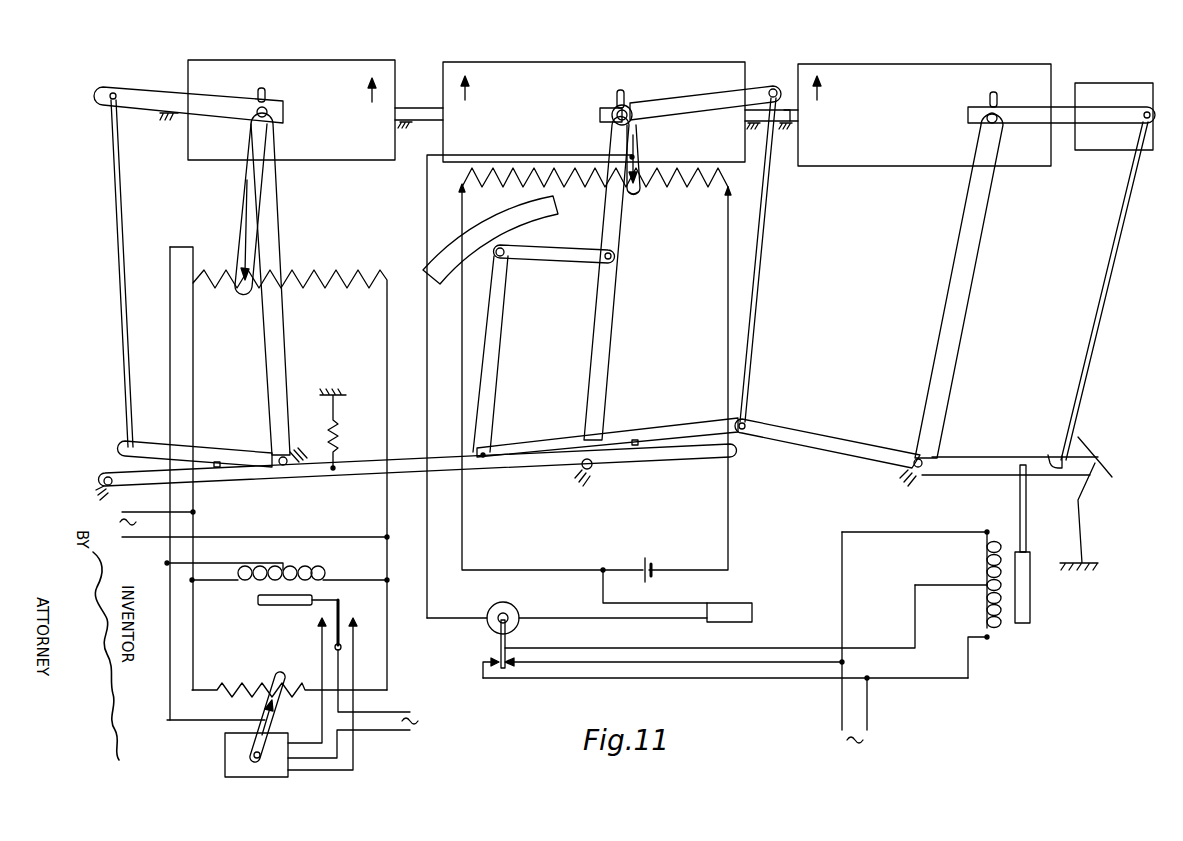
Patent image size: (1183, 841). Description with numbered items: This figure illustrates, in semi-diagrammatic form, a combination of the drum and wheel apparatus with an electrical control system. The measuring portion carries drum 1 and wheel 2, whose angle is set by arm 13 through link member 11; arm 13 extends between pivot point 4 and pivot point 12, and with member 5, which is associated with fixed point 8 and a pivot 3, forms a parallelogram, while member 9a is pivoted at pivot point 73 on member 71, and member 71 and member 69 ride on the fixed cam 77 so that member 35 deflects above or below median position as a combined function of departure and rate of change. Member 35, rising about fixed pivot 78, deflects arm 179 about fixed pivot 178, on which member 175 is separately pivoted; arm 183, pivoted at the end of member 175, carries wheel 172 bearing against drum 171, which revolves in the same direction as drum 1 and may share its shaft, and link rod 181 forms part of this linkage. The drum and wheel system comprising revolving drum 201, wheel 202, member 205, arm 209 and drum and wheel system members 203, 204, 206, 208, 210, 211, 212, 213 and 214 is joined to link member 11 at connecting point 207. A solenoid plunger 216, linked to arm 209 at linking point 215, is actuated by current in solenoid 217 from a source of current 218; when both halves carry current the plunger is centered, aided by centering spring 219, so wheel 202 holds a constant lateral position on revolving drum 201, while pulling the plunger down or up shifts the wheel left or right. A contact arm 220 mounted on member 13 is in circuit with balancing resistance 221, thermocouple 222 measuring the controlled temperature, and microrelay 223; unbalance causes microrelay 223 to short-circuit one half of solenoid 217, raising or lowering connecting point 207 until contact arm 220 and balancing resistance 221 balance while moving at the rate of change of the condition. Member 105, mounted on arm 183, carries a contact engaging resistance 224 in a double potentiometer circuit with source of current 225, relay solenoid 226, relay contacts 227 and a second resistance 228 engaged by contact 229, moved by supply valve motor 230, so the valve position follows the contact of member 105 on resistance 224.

The drum 1 is at (588, 65).
The wheel 2 is at (625, 97).
The pivot 3 is at (600, 115).
The pivot point 4 is at (615, 125).
The member 5 is at (617, 232).
The fixed point 8 is at (592, 472).
The member 9a is at (627, 432).
The link member 11 is at (758, 233).
The pivot point 12 is at (772, 86).
The arm 13 is at (688, 98).
The member 35 is at (497, 468).
The member 69 is at (545, 260).
The member 71 is at (494, 362).
The pivot point 73 is at (510, 250).
The fixed cam 77 is at (507, 211).
The fixed pivot 78 is at (108, 473).
The member 105 is at (245, 237).
The drum 171 is at (281, 63).
The wheel 172 is at (268, 96).
The member 175 is at (275, 220).
The fixed pivot 178 is at (290, 447).
The arm 179 is at (200, 450).
The link rod 181 is at (122, 227).
The arm 183 is at (133, 86).
The revolving drum 201 is at (943, 70).
The wheel 202 is at (997, 97).
The drum and wheel system member 203 is at (968, 112).
The drum and wheel system member 204 is at (998, 127).
The member 205 is at (948, 352).
The drum and wheel system member 206 is at (800, 440).
The connecting point 207 is at (748, 420).
The drum and wheel system member 208 is at (920, 470).
The arm 209 is at (943, 458).
The drum and wheel system member 210 is at (1050, 456).
The drum and wheel system member 211 is at (1102, 280).
The drum and wheel system member 212 is at (1148, 106).
The drum and wheel system member 213 is at (1113, 116).
The drum and wheel system member 214 is at (787, 124).
The linking point 215 is at (1027, 470).
The solenoid plunger 216 is at (1030, 590).
The solenoid 217 is at (995, 628).
The source of current 218 is at (866, 743).
The centering spring 219 is at (1094, 503).
The contact arm 220 is at (643, 158).
The balancing resistance 221 is at (652, 191).
The thermocouple 222 is at (722, 603).
The microrelay 223 is at (518, 626).
The resistance 224 is at (320, 268).
The source of current 225 is at (125, 512).
The relay solenoid 226 is at (295, 568).
The relay contacts 227 is at (332, 597).
The second resistance 228 is at (230, 678).
The contact 229 is at (273, 712).
The supply valve motor 230 is at (225, 743).